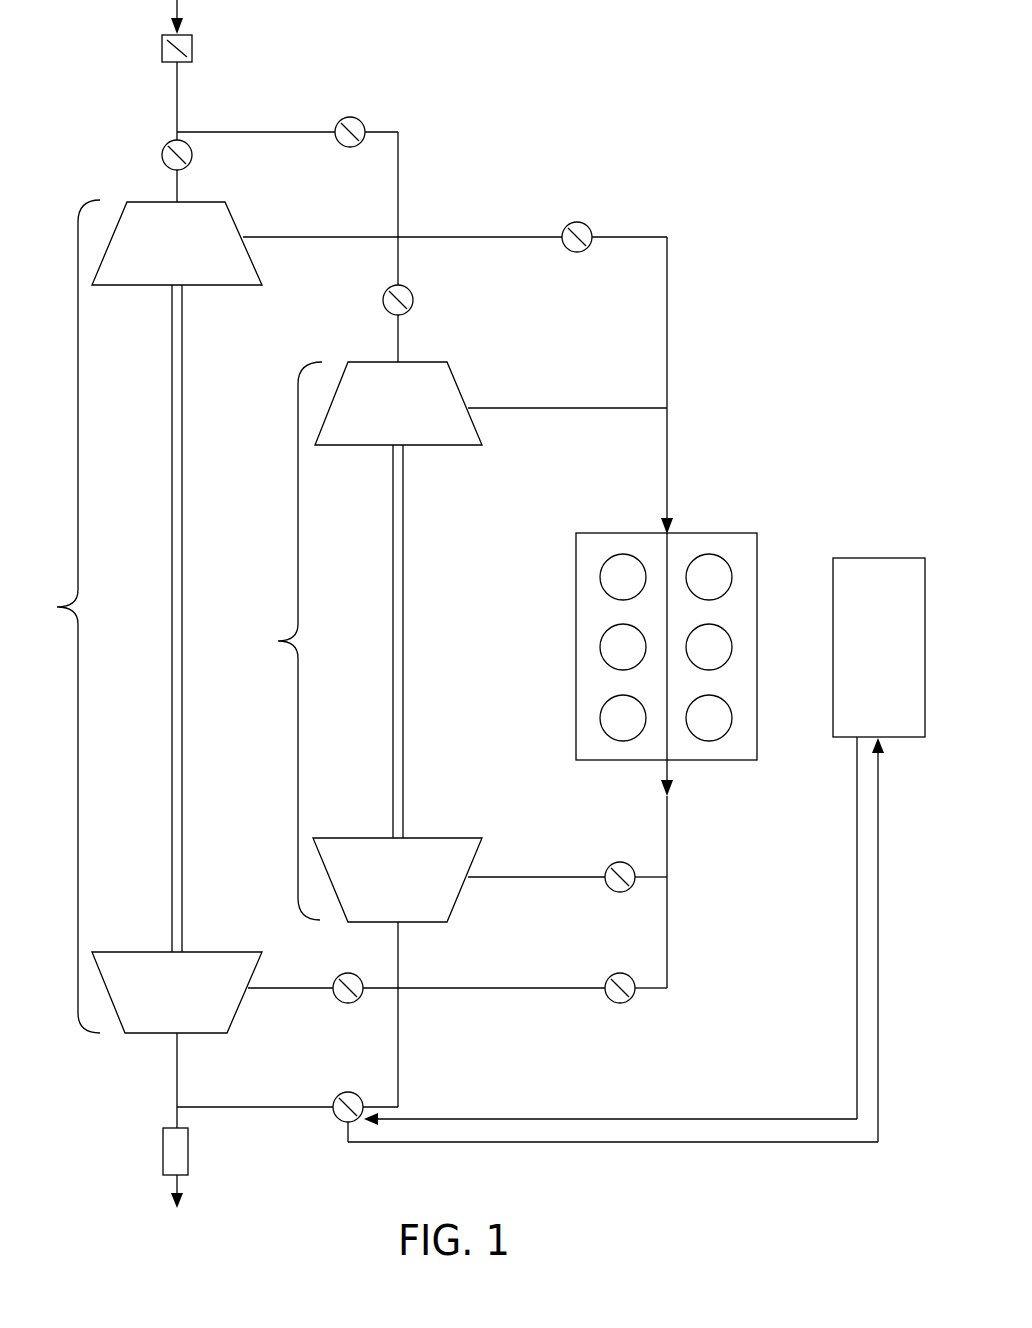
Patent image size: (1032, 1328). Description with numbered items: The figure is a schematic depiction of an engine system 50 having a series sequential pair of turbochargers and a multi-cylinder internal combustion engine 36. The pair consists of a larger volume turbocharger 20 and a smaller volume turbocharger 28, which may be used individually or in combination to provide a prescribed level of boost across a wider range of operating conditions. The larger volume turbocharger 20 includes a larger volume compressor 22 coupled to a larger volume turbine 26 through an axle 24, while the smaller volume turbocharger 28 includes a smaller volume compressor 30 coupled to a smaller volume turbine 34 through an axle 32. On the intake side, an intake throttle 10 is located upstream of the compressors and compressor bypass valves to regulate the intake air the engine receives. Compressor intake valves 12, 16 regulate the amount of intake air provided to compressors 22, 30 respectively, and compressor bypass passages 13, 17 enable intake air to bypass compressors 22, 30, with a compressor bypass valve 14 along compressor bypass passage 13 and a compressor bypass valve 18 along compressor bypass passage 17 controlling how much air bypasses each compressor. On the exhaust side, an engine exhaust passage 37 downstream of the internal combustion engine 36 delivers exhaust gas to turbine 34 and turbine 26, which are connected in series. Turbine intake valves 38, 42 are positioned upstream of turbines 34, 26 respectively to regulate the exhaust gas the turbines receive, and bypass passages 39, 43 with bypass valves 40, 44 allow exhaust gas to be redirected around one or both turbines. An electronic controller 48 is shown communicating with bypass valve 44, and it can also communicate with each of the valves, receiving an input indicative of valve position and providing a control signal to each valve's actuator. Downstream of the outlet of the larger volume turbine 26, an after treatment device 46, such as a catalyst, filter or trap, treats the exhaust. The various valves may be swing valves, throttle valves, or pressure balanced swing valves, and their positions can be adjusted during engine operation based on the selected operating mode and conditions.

The intake throttle 10 is at (162, 47).
The compressor intake valve 12 is at (162, 155).
The compressor bypass passage 13 is at (248, 131).
The compressor bypass valve 14 is at (350, 116).
The compressor intake valve 16 is at (413, 300).
The compressor bypass passage 17 is at (466, 236).
The compressor bypass valve 18 is at (575, 222).
The larger volume turbocharger 20 is at (65, 616).
The larger volume compressor 22 is at (232, 212).
The axle 24 is at (182, 612).
The larger volume turbine 26 is at (213, 950).
The smaller volume turbocharger 28 is at (288, 641).
The smaller volume compressor 30 is at (476, 424).
The axle 32 is at (403, 640).
The smaller volume turbine 34 is at (453, 837).
The internal combustion engine 36 is at (708, 532).
The engine exhaust passage 37 is at (667, 841).
The turbine intake valve 38 is at (618, 892).
The bypass passage 39 is at (667, 929).
The bypass valve 40 is at (618, 1003).
The turbine intake valve 42 is at (346, 1003).
The bypass passage 43 is at (398, 1046).
The bypass valve 44 is at (334, 1100).
The after treatment device 46 is at (188, 1151).
The electronic controller 48 is at (880, 557).
The engine system 50 is at (768, 92).